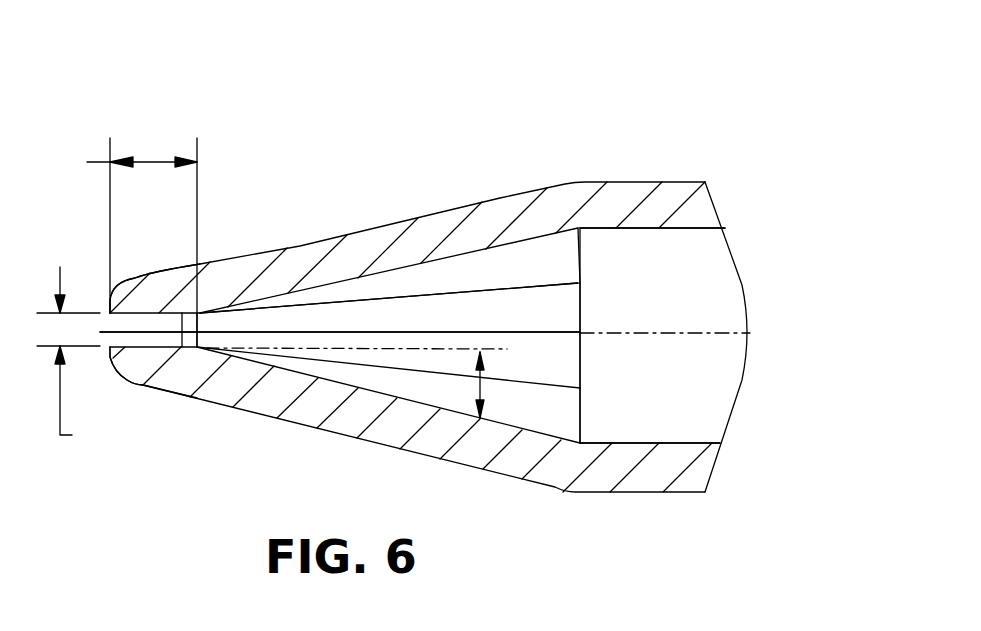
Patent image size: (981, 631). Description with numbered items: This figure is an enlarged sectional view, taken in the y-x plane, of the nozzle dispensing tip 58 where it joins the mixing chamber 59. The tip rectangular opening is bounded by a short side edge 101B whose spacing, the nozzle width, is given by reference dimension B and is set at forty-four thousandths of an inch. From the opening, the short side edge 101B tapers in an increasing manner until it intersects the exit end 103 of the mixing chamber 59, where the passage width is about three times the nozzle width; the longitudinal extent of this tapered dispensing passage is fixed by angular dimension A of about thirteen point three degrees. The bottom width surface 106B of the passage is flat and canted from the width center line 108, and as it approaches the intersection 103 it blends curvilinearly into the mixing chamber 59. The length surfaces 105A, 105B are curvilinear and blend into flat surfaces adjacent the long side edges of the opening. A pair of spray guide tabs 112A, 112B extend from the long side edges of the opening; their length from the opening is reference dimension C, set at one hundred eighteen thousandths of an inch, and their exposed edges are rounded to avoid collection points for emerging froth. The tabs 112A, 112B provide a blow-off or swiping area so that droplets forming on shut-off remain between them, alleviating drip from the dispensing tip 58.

The dispensing tip 58 is at (412, 290).
The mixing chamber 59 is at (580, 228).
The short side edge 101B is at (207, 313).
The exit end of mixing chamber 103 is at (580, 362).
The length surface 105A is at (536, 268).
The length surface 105B is at (537, 403).
The bottom width surface 106B is at (550, 344).
The width center line 108 is at (322, 327).
The spray guide tab 112A is at (157, 392).
The spray guide tab 112B is at (167, 313).
The angular dimension A is at (478, 392).
The reference dimension B is at (68, 377).
The reference dimension C is at (153, 157).